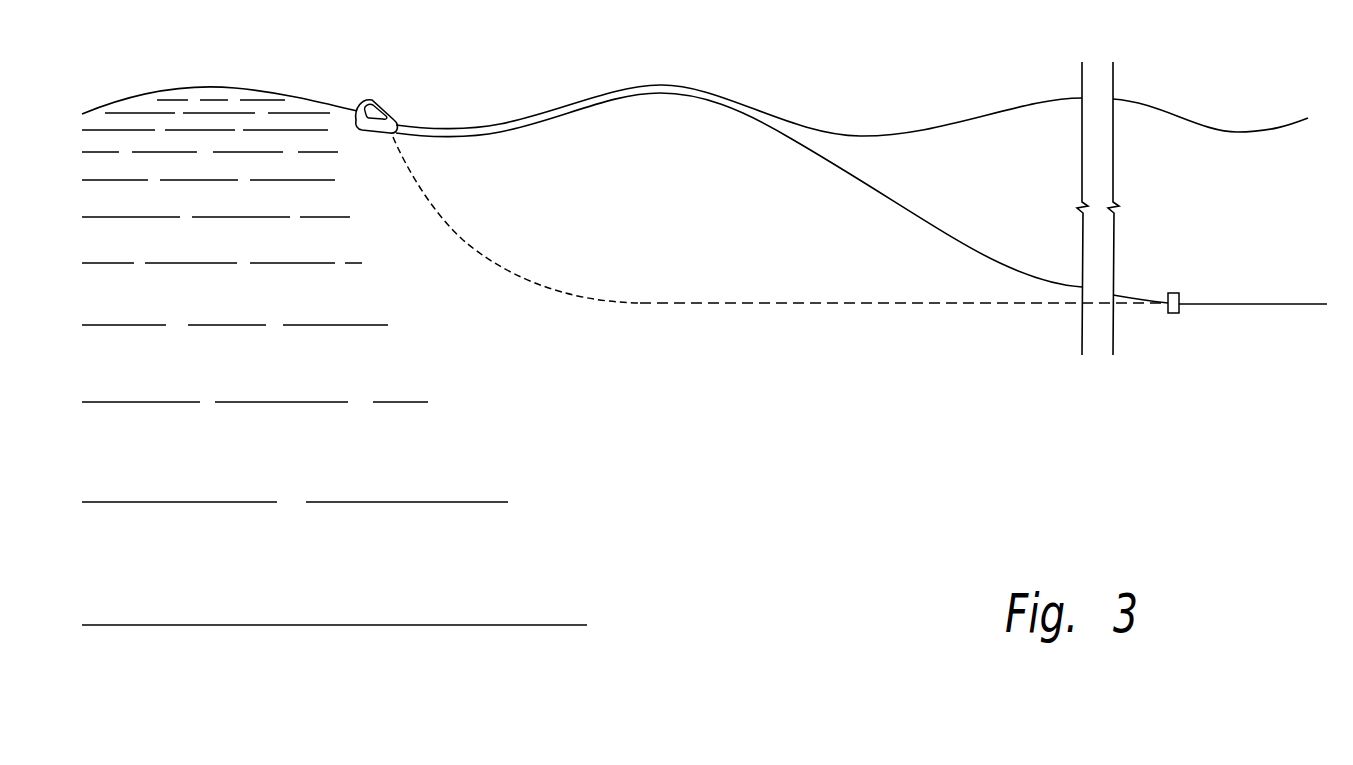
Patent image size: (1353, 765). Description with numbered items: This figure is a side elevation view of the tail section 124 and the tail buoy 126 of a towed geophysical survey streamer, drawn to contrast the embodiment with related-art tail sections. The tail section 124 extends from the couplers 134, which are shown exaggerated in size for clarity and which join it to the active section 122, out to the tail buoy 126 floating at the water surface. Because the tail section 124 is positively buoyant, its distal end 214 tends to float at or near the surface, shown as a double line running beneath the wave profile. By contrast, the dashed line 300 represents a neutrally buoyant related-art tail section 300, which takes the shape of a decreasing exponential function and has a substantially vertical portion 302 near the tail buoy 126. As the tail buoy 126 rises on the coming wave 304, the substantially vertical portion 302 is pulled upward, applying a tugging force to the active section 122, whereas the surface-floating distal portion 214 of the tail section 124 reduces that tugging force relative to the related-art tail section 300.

The active section 122 is at (1243, 303).
The tail section 124 is at (927, 216).
The tail buoy 126 is at (373, 98).
The couplers 134 is at (1173, 292).
The distal end 214 is at (490, 158).
The related-art tail section 300 is at (802, 299).
The substantially vertical portion 302 is at (482, 272).
The coming wave 304 is at (779, 97).